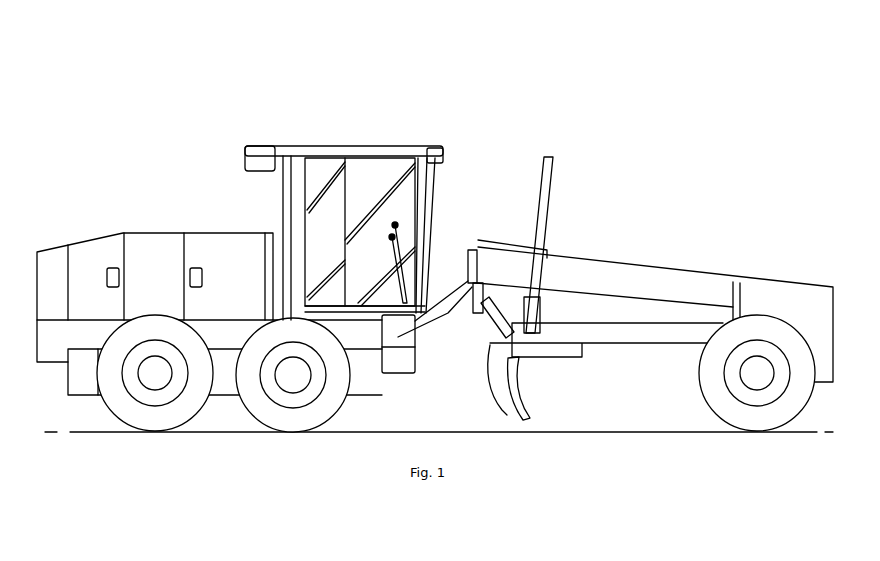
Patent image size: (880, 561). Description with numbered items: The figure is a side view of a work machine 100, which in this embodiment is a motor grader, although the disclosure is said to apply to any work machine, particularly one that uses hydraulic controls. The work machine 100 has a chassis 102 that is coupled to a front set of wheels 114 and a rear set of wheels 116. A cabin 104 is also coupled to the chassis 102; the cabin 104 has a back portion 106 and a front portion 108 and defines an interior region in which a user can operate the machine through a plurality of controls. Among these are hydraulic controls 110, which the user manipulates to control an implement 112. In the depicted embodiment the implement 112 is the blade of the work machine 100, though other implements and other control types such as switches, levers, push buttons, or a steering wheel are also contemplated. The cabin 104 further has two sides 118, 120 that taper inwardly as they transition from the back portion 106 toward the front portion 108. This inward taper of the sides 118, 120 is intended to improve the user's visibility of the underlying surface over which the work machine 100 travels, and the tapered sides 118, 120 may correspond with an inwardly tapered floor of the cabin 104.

The work machine 100 is at (94, 131).
The chassis 102 is at (358, 343).
The cabin 104 is at (383, 150).
The back portion 106 is at (277, 215).
The front portion 108 is at (449, 213).
The hydraulic controls 110 is at (395, 225).
The implement 112 is at (520, 395).
The front set of wheels 114 is at (755, 335).
The rear set of wheels 116 is at (288, 422).
The side 118 is at (327, 248).
The side 120 is at (335, 139).